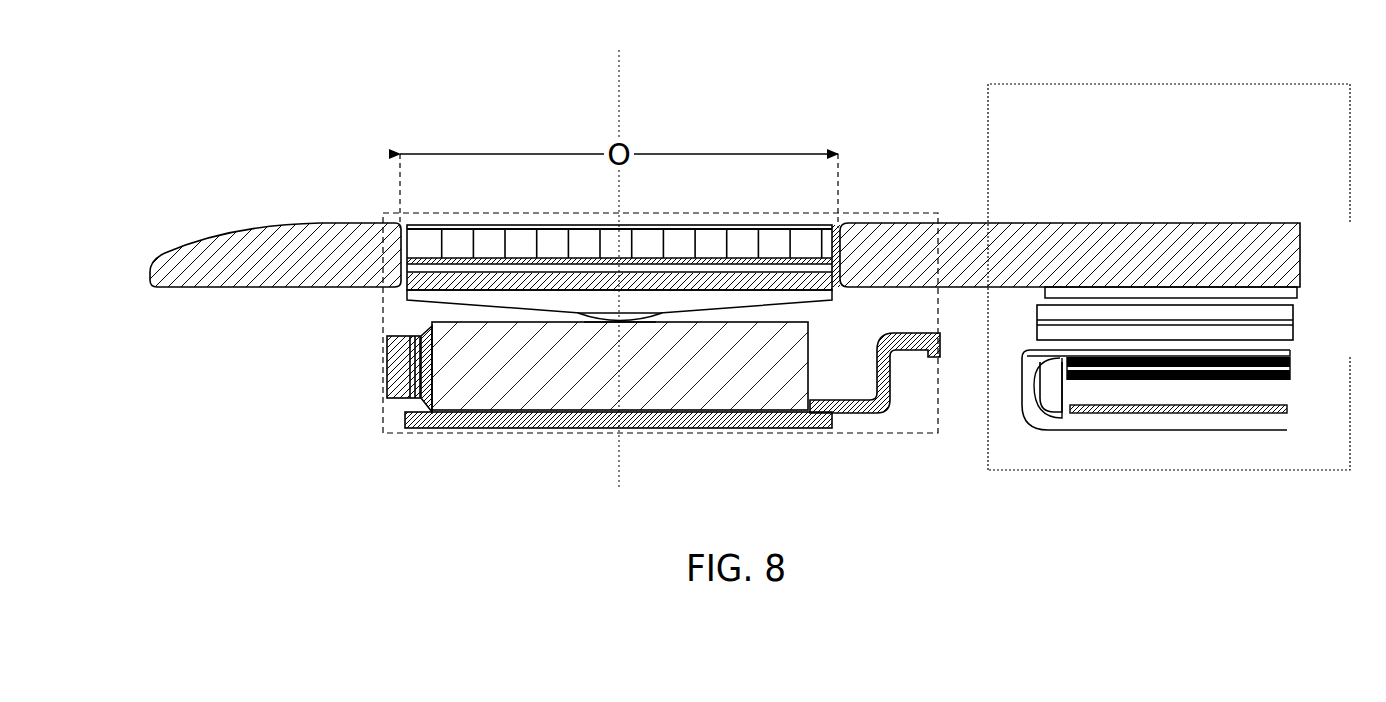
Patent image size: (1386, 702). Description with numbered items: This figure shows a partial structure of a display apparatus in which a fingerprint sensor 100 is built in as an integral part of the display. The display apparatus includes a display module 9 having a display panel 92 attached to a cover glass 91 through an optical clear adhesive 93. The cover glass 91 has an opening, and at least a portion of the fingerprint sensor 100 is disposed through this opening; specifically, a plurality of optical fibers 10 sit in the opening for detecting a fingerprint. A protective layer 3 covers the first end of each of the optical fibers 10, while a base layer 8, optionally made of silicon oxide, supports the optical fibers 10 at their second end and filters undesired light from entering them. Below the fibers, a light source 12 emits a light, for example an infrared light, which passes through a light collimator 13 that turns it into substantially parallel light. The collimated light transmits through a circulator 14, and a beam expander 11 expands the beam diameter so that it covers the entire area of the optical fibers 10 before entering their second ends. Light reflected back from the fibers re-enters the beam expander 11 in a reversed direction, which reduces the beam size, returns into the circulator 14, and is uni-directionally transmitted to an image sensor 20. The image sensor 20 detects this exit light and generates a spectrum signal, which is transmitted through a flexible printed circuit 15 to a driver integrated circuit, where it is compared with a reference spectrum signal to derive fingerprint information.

The fingerprint sensor 100 is at (452, 212).
The optical fibers 10 is at (760, 227).
The protective layer 3 is at (805, 227).
The base layer 8 is at (840, 227).
The display module 9 is at (1142, 84).
The cover glass 91 is at (1280, 250).
The display panel 92 is at (1292, 323).
The optical clear adhesive 93 is at (1282, 293).
The beam expander 11 is at (480, 297).
The light source 12 is at (480, 370).
The light collimator 13 is at (395, 400).
The circulator 14 is at (773, 377).
The flexible printed circuit 15 is at (843, 417).
The image sensor 20 is at (500, 412).